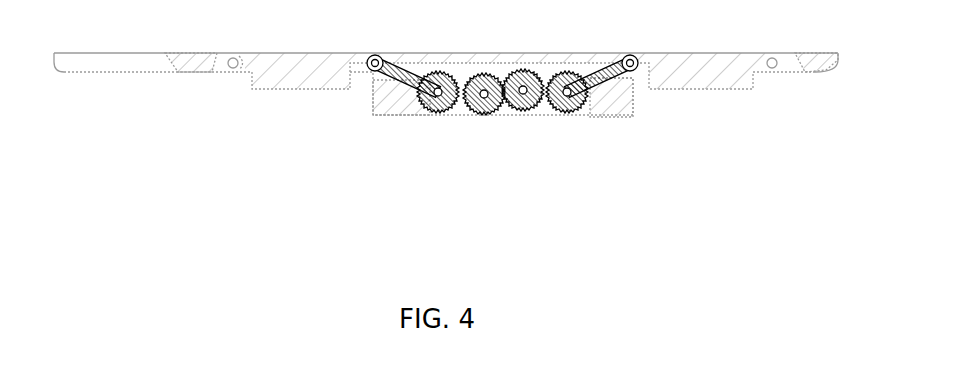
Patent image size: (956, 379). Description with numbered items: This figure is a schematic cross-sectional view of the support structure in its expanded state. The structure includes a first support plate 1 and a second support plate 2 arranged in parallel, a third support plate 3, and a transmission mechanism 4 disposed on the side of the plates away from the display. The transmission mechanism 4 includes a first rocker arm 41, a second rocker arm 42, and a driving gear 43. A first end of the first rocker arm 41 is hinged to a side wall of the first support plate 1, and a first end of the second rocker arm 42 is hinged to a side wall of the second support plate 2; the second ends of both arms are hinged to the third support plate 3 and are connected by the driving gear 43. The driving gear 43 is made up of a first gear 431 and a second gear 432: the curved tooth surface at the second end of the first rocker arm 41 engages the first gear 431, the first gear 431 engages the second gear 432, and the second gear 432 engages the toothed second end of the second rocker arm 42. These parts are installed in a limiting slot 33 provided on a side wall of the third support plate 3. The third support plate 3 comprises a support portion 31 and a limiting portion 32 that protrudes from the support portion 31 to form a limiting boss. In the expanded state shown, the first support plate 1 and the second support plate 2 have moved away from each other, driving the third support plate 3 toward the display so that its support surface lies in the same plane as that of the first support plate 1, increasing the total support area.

The first support plate 1 is at (308, 72).
The second support plate 2 is at (682, 72).
The third support plate 3 is at (460, 137).
The support portion 31 is at (408, 110).
The limiting portion 32 is at (368, 76).
The limiting slot 33 is at (413, 92).
The transmission mechanism 4 is at (518, 141).
The first rocker arm 41 is at (437, 93).
The second rocker arm 42 is at (573, 92).
The driving gear 43 is at (498, 126).
The first gear 431 is at (490, 98).
The second gear 432 is at (530, 98).